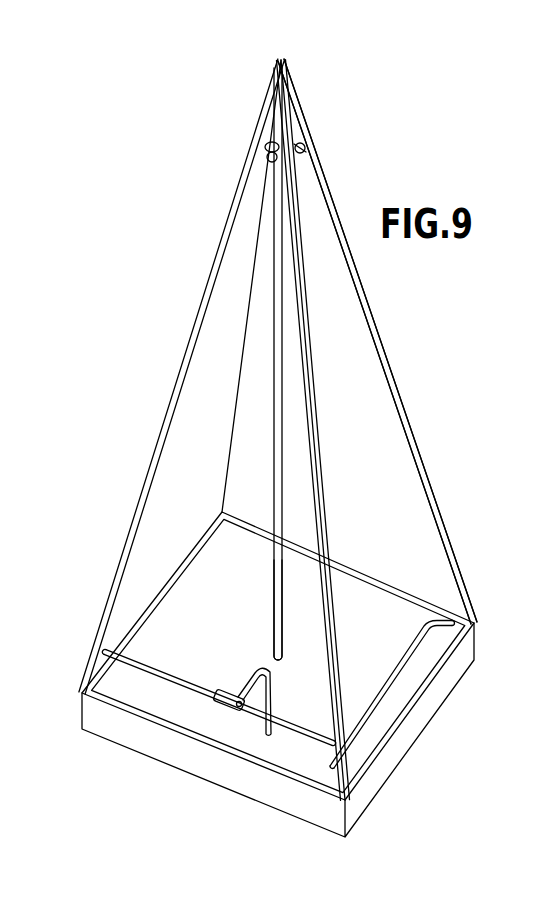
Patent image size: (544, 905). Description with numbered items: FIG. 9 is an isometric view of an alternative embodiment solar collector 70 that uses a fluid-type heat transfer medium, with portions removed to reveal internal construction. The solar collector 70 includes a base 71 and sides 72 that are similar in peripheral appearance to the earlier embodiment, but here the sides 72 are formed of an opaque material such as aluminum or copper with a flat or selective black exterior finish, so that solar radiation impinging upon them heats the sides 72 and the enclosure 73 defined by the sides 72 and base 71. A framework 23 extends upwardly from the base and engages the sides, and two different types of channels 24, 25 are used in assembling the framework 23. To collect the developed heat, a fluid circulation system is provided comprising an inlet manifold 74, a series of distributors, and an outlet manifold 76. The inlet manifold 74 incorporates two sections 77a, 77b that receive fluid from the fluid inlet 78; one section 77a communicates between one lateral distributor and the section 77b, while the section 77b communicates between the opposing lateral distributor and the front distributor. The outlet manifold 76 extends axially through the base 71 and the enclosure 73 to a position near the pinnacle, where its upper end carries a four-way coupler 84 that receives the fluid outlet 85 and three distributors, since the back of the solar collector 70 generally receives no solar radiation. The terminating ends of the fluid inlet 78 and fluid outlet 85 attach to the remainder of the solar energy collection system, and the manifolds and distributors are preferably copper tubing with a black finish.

The framework 23 is at (413, 435).
The channel 24 is at (373, 572).
The channel 25 is at (458, 567).
The solar collector 70 is at (408, 347).
The base 71 is at (412, 735).
The sides 72 is at (166, 413).
The enclosure 73 is at (342, 335).
The inlet manifold 74 is at (251, 663).
The outlet manifold 76 is at (271, 587).
The section 77a is at (152, 682).
The section 77b is at (401, 660).
The fluid inlet 78 is at (238, 690).
The coupler 84 is at (305, 150).
The fluid outlet 85 is at (275, 378).